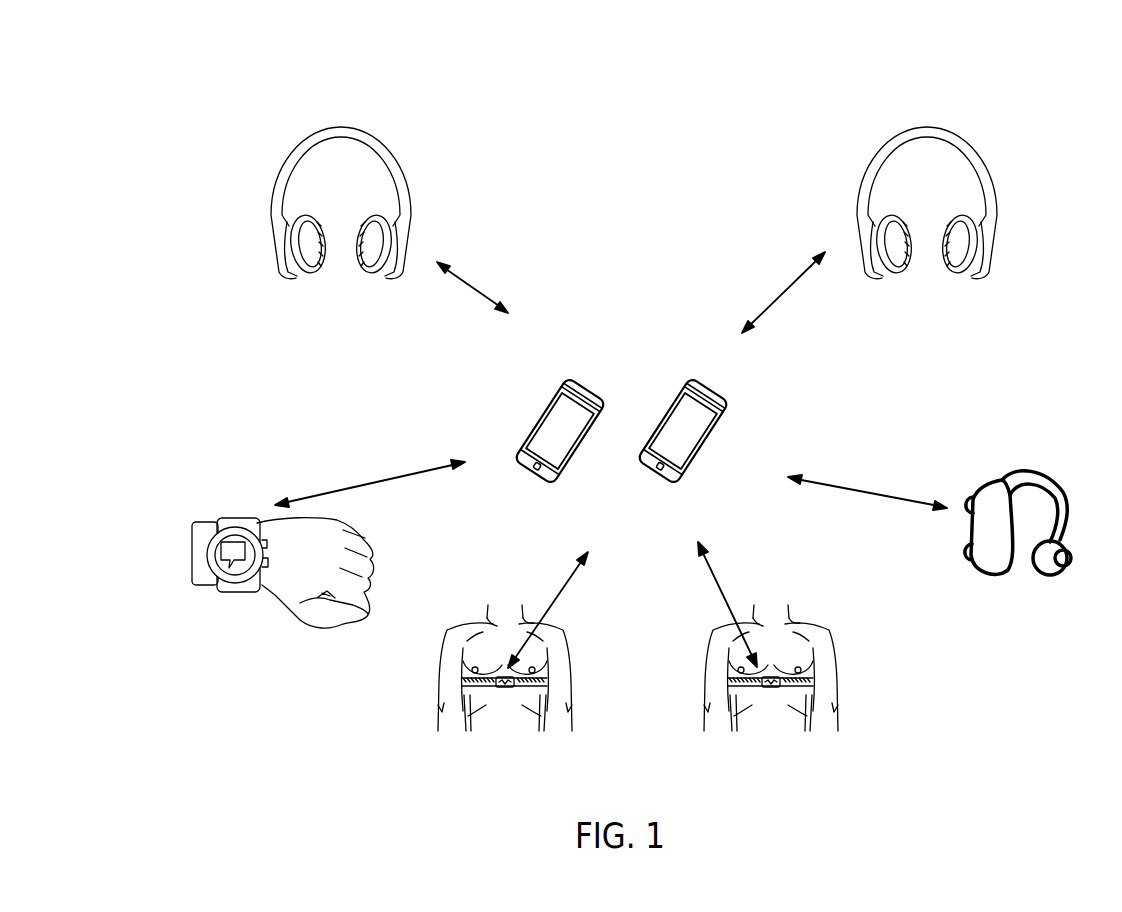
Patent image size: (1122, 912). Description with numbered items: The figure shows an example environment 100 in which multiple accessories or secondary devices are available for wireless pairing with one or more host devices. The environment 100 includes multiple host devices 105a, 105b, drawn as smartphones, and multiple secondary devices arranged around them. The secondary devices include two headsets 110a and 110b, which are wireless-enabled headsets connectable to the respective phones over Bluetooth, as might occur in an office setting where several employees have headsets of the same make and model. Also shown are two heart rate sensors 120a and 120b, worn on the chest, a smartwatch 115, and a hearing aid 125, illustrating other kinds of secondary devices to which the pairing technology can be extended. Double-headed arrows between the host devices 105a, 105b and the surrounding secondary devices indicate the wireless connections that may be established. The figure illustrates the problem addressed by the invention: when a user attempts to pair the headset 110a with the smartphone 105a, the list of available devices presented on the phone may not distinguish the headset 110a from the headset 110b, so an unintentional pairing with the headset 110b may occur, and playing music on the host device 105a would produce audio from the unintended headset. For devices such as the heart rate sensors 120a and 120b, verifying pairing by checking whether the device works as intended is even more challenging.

The environment 100 is at (652, 50).
The host device 105a is at (546, 430).
The host device 105b is at (696, 430).
The headset 110a is at (319, 203).
The headset 110b is at (948, 202).
The smartwatch 115 is at (283, 581).
The heart rate sensor 120a is at (505, 689).
The heart rate sensor 120b is at (771, 697).
The hearing aid 125 is at (1028, 504).